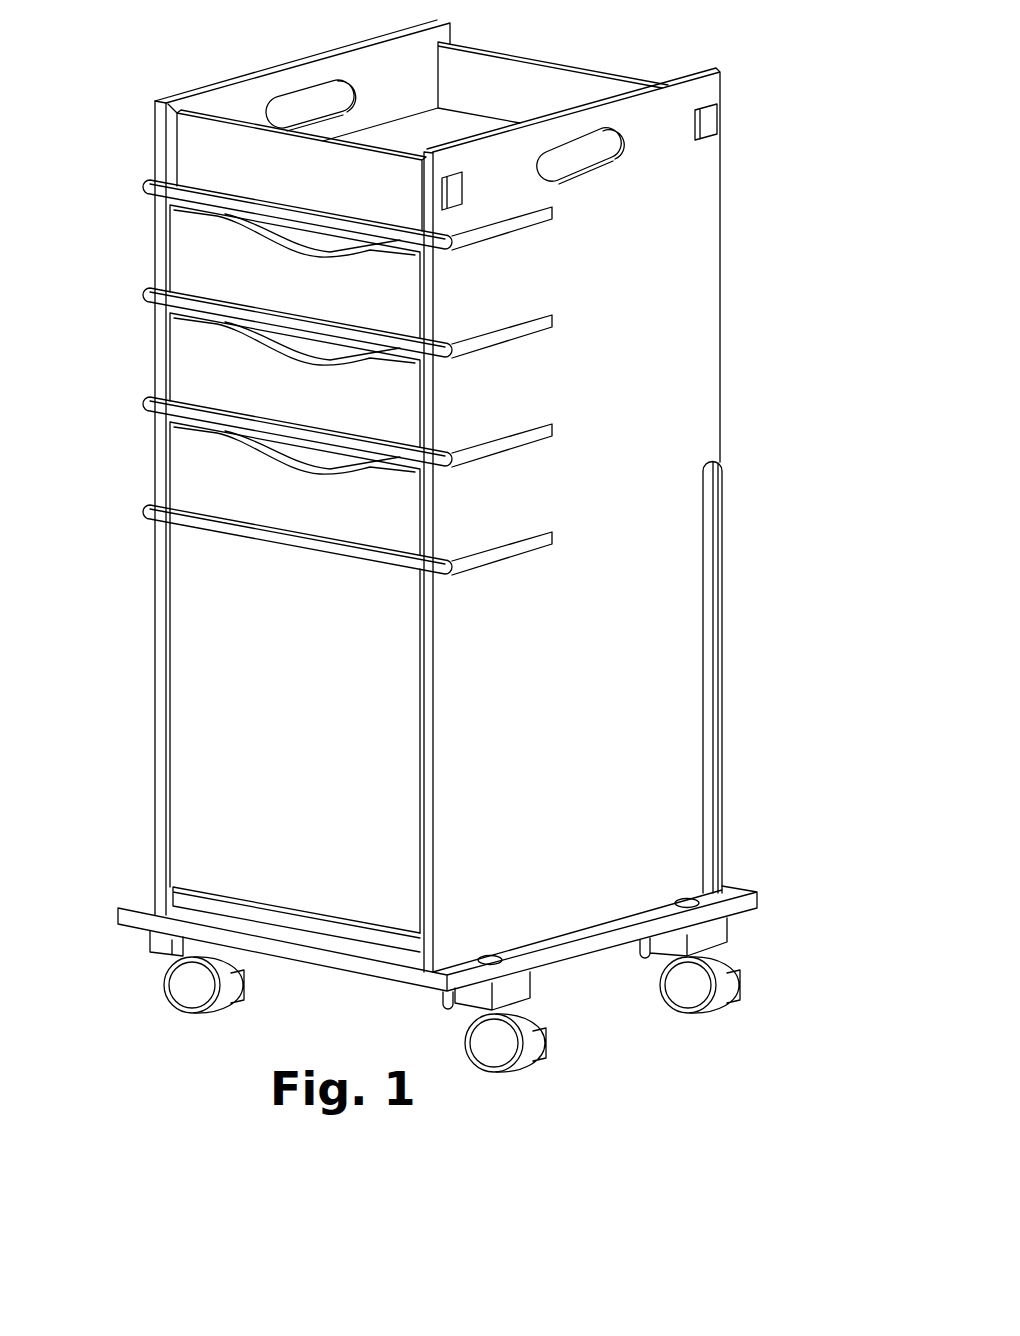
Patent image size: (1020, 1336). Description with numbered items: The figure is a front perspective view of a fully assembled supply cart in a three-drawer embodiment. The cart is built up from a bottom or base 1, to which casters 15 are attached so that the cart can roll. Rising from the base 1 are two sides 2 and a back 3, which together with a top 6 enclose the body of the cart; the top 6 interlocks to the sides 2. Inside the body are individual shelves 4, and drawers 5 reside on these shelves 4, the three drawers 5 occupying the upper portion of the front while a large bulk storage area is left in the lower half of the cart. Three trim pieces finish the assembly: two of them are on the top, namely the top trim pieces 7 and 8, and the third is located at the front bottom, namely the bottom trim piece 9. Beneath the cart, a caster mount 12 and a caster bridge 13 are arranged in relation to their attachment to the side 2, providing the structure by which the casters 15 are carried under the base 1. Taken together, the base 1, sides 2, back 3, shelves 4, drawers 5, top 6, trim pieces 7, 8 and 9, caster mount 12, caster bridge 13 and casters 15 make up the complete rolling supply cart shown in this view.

The base 1 is at (365, 887).
The sides 2 is at (636, 280).
The back 3 is at (718, 625).
The shelves 4 is at (240, 527).
The drawers 5 is at (373, 295).
The top 6 is at (408, 136).
The top trim piece 7 is at (385, 190).
The top trim piece 8 is at (480, 84).
The bottom trim piece 9 is at (285, 925).
The caster mount 12 is at (680, 947).
The caster bridge 13 is at (535, 970).
The casters 15 is at (240, 1002).